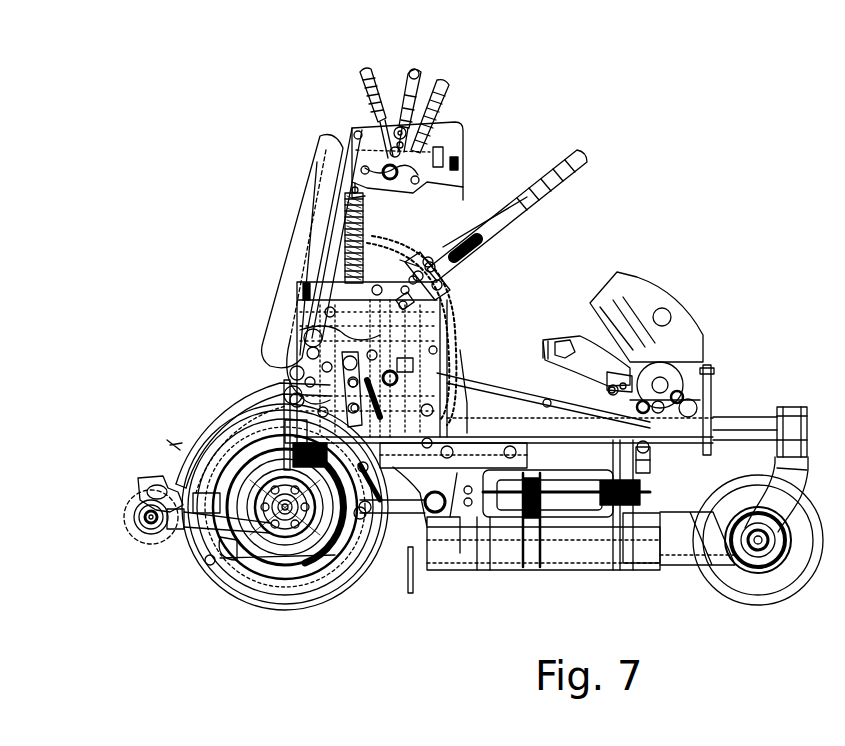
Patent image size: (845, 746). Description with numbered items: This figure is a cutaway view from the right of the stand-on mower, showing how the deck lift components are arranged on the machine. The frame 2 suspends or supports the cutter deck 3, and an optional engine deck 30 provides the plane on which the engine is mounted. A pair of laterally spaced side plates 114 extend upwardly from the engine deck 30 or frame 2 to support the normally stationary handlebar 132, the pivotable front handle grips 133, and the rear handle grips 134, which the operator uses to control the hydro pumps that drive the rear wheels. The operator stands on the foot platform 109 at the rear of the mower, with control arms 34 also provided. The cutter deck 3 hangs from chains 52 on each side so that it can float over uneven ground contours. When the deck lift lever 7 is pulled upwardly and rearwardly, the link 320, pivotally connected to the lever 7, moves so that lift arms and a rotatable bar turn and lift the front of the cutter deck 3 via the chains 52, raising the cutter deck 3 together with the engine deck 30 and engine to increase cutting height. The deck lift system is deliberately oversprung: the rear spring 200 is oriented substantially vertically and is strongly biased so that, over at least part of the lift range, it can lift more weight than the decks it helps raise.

The frame 2 is at (497, 432).
The cutter deck 3 is at (583, 533).
The deck lift lever 7 is at (528, 198).
The engine deck 30 is at (393, 560).
The control arms 34 is at (285, 507).
The chains 52 is at (650, 458).
The foot platform 109 is at (192, 445).
The side plates 114 is at (370, 207).
The handlebar 132 is at (417, 70).
The front handle grips 133 is at (440, 100).
The rear handle grips 134 is at (360, 107).
The rear spring 200 is at (326, 226).
The link 320 is at (497, 425).